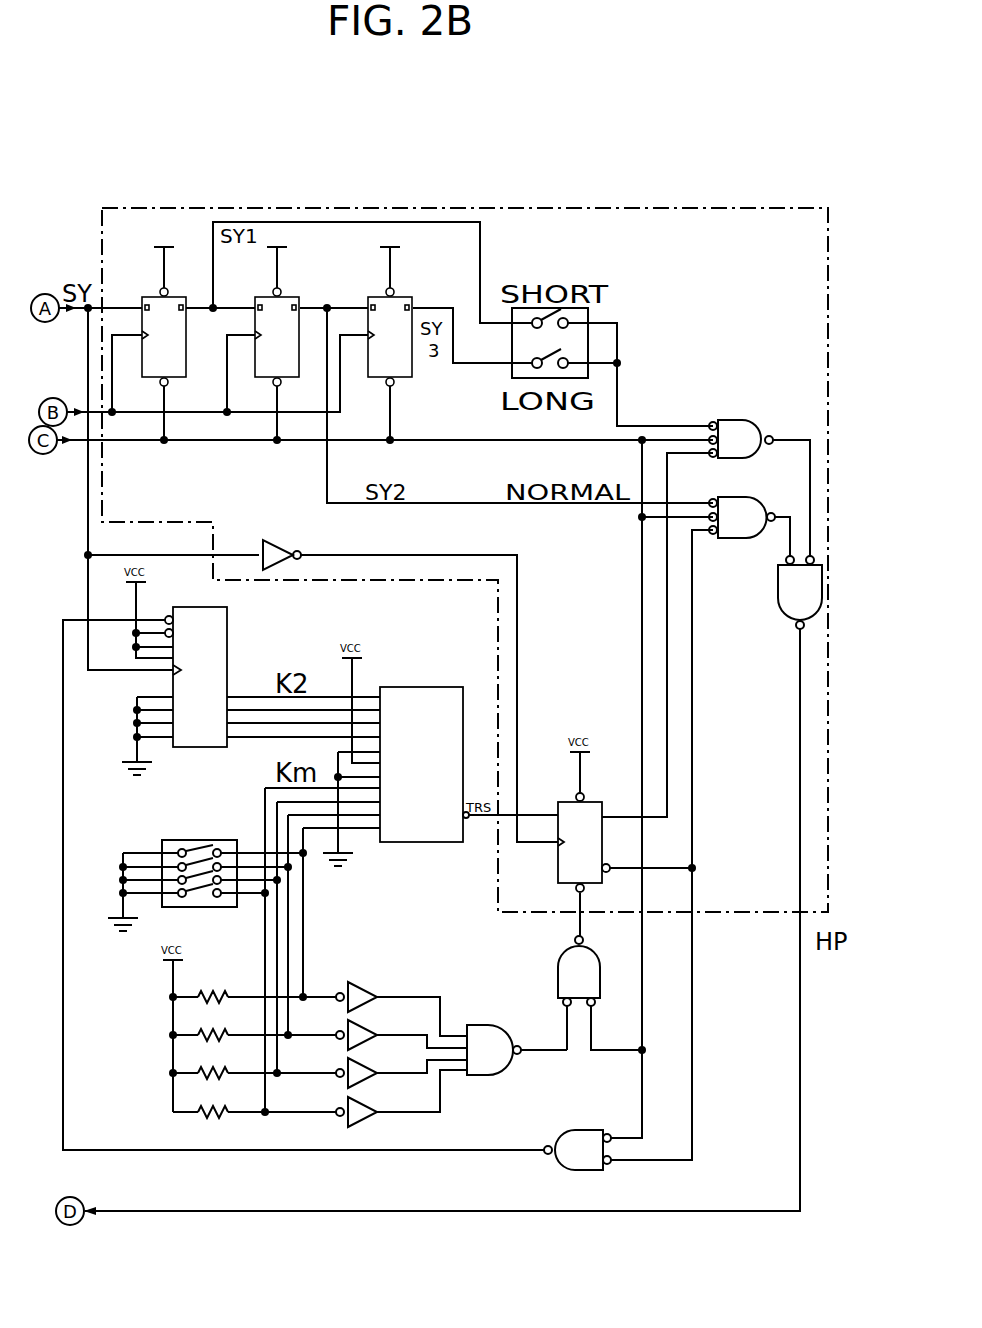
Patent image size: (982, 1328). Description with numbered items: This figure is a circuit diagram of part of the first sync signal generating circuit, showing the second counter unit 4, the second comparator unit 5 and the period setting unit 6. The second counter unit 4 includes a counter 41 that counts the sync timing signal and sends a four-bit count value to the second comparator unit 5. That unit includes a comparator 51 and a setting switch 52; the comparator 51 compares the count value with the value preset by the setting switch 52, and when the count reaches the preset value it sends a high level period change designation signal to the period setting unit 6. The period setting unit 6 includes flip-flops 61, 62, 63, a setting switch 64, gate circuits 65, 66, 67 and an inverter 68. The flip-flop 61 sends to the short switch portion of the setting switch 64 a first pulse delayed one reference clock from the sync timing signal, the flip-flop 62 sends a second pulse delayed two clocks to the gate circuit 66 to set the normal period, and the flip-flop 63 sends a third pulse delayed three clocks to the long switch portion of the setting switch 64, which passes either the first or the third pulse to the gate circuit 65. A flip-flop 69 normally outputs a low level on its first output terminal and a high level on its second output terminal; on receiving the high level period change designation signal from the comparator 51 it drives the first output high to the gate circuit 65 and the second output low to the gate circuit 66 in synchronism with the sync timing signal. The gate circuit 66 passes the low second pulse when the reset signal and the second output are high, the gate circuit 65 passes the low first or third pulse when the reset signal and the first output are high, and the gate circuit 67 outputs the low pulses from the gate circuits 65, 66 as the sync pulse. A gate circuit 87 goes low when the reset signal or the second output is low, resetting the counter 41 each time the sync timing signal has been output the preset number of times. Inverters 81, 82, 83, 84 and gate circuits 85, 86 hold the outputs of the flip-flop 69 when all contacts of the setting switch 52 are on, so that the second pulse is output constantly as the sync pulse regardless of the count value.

The period setting unit 6 is at (100, 243).
The flip-flop 61 is at (170, 297).
The flip-flop 62 is at (282, 297).
The flip-flop 63 is at (405, 297).
The setting switch 64 is at (588, 312).
The gate circuit 65 is at (722, 420).
The gate circuit 66 is at (735, 497).
The gate circuit 67 is at (778, 592).
The inverter 68 is at (283, 538).
The flip-flop 69 is at (592, 802).
The counter 41 is at (227, 622).
The second counter unit 4 is at (246, 666).
The second comparator unit 5 is at (393, 682).
The comparator 51 is at (437, 687).
The setting switch 52 is at (196, 840).
The inverter 81 is at (355, 985).
The inverter 82 is at (355, 1025).
The inverter 83 is at (355, 1062).
The inverter 84 is at (355, 1100).
The gate circuit 85 is at (493, 1025).
The gate circuit 86 is at (598, 975).
The gate circuit 87 is at (585, 1130).